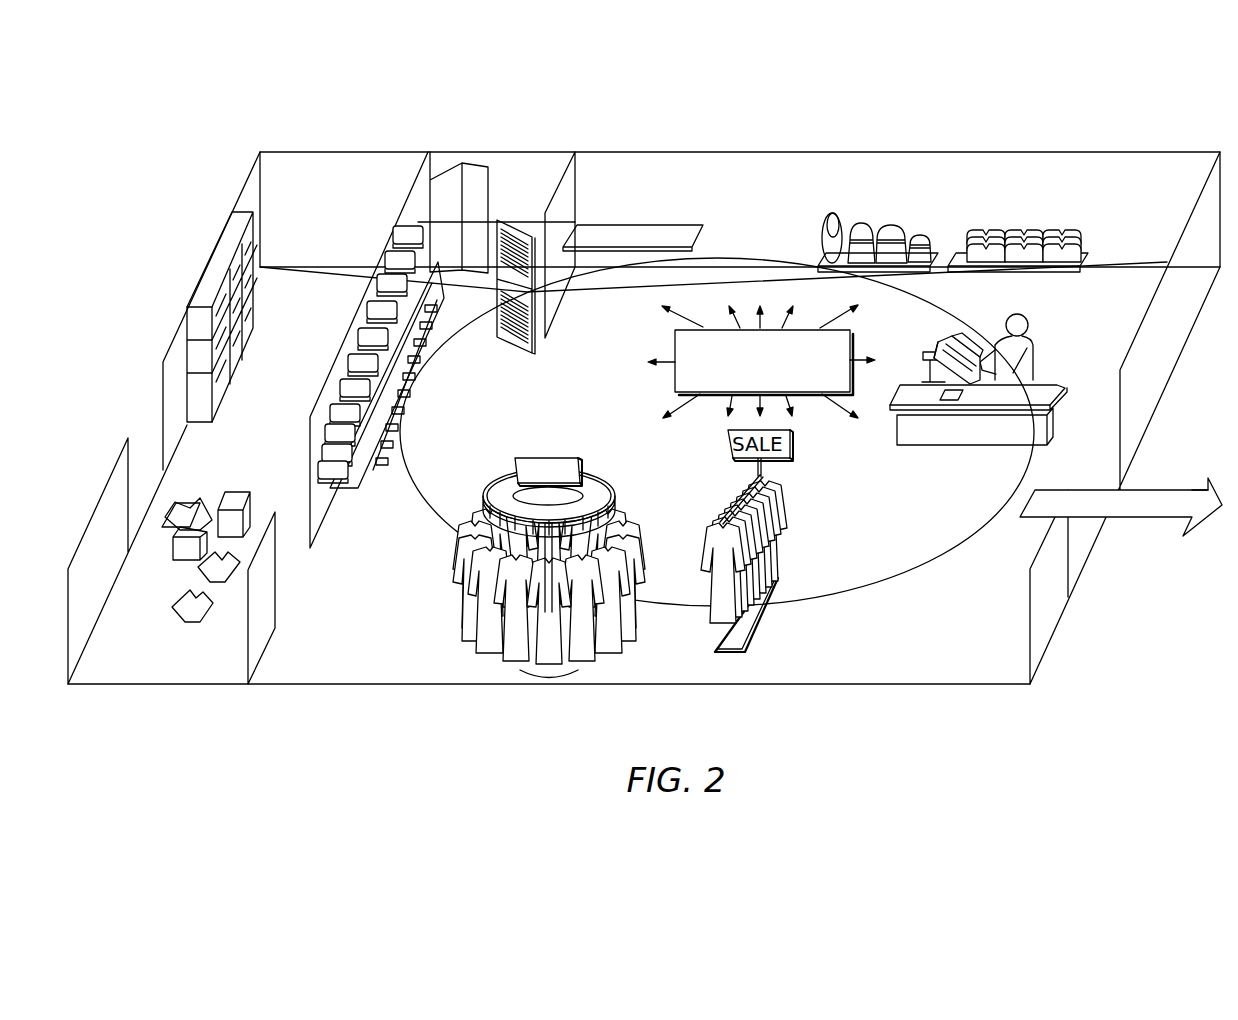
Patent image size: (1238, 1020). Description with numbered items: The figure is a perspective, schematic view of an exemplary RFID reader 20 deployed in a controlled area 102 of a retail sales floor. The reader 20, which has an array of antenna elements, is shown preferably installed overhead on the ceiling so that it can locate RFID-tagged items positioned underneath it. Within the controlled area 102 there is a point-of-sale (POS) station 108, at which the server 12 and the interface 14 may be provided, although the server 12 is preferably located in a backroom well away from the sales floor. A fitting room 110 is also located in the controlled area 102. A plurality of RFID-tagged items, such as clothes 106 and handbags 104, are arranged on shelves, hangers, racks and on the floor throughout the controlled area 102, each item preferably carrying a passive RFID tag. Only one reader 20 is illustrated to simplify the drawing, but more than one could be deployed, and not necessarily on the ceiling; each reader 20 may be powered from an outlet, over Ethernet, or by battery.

The controlled area 102 is at (923, 682).
The handbags 104 is at (932, 202).
The clothes 106 is at (477, 658).
The point-of-sale (POS) station 108 is at (994, 383).
The fitting room 110 is at (528, 173).
The server 12 is at (960, 350).
The interface 14 is at (942, 335).
The RFID reader 20 is at (710, 400).